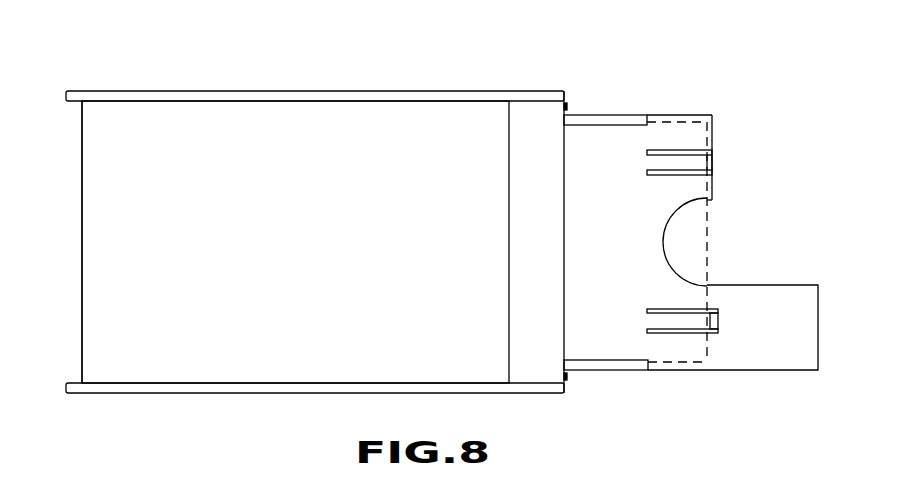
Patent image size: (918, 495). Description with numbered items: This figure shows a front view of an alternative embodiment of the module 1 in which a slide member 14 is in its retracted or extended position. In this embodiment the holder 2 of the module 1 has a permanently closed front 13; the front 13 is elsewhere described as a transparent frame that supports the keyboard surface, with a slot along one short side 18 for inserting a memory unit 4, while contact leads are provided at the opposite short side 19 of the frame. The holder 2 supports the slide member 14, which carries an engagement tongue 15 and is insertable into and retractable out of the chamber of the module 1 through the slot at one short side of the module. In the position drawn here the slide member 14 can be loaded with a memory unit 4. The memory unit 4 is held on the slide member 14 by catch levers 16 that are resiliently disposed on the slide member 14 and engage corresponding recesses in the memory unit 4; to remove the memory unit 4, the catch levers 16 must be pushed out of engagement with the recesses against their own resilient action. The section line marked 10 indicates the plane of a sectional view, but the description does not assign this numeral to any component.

The module 1 is at (250, 416).
The holder 2 is at (540, 103).
The memory unit 4 is at (695, 242).
The section line 10- 10 is at (523, 242).
The front 13 is at (462, 132).
The slide member 14 is at (600, 137).
The engagement tongue 15 is at (758, 355).
The catch levers 16 is at (713, 158).
The short side 18 is at (83, 352).
The short side 19 is at (567, 385).